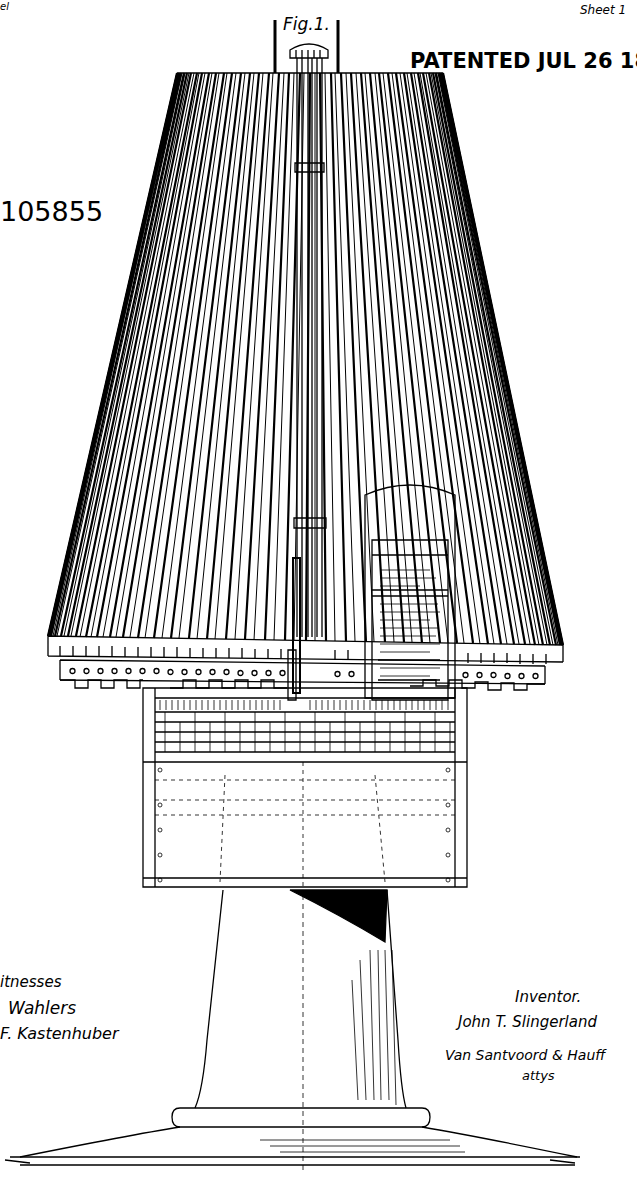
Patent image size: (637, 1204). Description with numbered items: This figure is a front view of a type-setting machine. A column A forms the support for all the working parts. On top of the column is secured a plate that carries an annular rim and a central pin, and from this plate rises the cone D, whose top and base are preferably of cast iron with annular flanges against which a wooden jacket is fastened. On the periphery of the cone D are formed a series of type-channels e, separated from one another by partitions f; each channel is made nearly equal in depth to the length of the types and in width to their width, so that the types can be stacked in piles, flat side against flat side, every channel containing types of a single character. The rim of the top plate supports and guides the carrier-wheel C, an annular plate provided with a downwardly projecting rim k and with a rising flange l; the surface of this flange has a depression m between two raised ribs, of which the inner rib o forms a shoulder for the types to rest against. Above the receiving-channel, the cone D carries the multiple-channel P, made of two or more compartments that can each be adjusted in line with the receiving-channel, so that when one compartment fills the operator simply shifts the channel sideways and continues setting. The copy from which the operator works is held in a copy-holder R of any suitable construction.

The column A is at (301, 1030).
The carrier-wheel C is at (305, 770).
The cone D is at (222, 520).
The multiple-channel P is at (305, 379).
The copy-holder R is at (410, 592).
The type-channels e is at (305, 359).
The partitions f is at (303, 160).
The bottom rail g is at (305, 639).
The grate h is at (305, 725).
The downwardly projecting rim k is at (302, 669).
The rising flange l is at (305, 359).
The depression m is at (302, 689).
The raised rib o is at (310, 564).
The cap and rods u is at (307, 48).
The foot plate x is at (292, 1155).